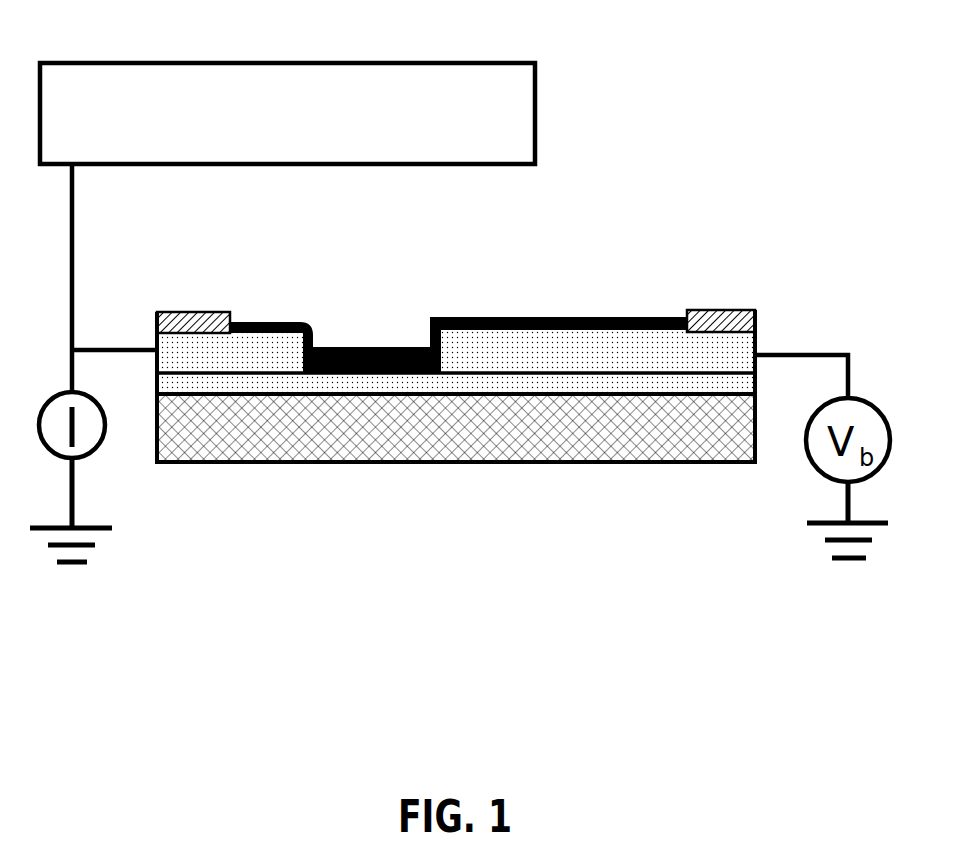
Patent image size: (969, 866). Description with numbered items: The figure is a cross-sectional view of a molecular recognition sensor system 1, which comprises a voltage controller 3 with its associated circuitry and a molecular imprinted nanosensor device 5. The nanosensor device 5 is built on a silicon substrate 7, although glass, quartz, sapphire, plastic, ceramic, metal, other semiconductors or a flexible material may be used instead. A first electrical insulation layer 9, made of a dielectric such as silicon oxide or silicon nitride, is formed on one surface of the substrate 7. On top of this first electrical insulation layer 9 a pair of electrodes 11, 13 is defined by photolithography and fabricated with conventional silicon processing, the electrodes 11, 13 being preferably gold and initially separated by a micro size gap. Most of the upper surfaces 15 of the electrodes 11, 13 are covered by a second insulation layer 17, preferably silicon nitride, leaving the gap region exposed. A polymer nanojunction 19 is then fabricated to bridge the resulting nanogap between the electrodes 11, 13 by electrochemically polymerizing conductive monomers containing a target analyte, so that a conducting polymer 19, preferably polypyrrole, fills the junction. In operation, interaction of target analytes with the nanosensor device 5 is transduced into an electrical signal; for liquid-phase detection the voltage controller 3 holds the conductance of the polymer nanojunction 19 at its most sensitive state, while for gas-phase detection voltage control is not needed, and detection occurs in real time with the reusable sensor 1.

The molecular recognition sensor system 1 is at (712, 164).
The voltage controller 3 is at (500, 100).
The molecular imprinted nanosensor device 5 is at (331, 462).
The silicon substrate 7 is at (578, 432).
The first electrical insulation layer 9 is at (670, 385).
The electrode 11 is at (273, 358).
The electrode 13 is at (520, 357).
The upper surfaces of electrodes 15 is at (243, 318).
The second insulation layer 17 is at (205, 312).
The polymer nanojunction 19 is at (375, 348).